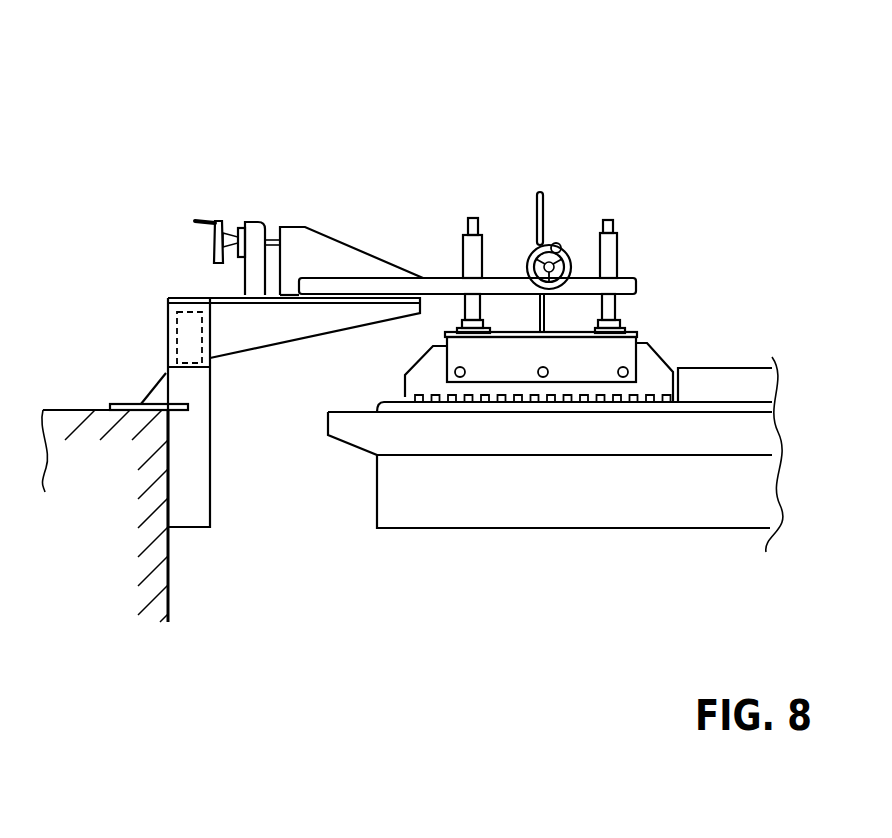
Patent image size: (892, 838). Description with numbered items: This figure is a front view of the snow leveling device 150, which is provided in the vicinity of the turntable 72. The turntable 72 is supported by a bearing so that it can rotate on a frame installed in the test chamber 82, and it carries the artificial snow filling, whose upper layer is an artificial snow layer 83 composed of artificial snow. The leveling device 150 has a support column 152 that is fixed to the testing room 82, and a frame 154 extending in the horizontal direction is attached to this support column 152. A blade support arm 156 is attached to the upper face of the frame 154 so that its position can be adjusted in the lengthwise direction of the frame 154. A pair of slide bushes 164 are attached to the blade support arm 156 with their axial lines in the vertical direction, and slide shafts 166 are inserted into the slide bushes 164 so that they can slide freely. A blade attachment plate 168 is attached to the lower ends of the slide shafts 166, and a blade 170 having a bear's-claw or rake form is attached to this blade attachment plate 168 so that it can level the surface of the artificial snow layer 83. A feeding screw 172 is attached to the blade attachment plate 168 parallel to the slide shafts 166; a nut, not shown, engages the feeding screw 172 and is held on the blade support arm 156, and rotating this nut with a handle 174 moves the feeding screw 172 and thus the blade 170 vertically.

The turntable 72 is at (373, 498).
The test chamber 82 is at (232, 315).
The artificial snow layer 83 is at (403, 398).
The leveling device 150 is at (529, 221).
The support column 152 is at (192, 528).
The frame 154 is at (247, 353).
The blade support arm 156 is at (637, 285).
The slide bushes 164 is at (460, 252).
The slide shafts 166 is at (472, 218).
The blade attachment plate 168 is at (625, 353).
The blade 170 is at (658, 377).
The feeding screw 172 is at (545, 312).
The handle 174 is at (565, 250).